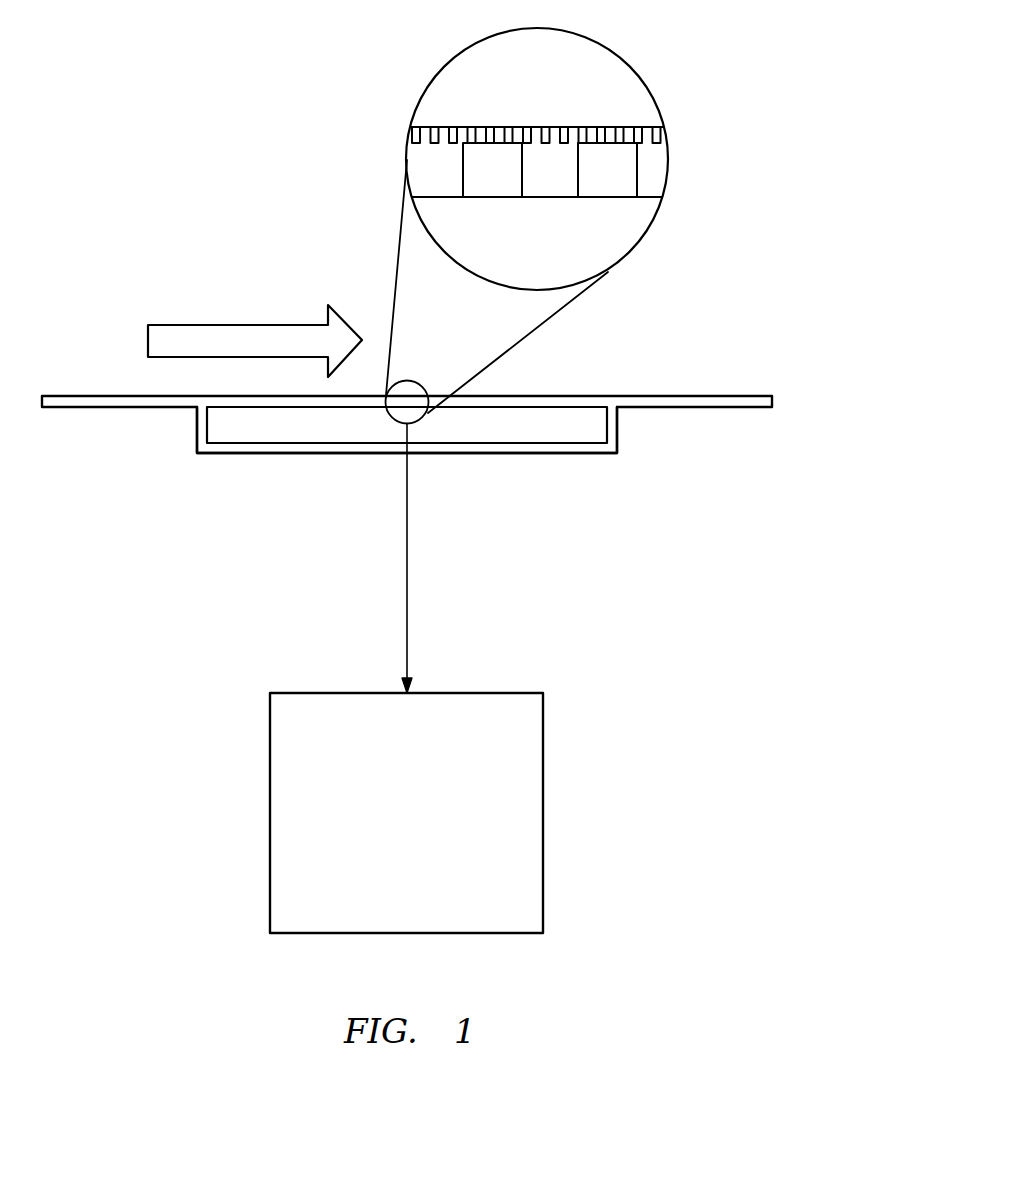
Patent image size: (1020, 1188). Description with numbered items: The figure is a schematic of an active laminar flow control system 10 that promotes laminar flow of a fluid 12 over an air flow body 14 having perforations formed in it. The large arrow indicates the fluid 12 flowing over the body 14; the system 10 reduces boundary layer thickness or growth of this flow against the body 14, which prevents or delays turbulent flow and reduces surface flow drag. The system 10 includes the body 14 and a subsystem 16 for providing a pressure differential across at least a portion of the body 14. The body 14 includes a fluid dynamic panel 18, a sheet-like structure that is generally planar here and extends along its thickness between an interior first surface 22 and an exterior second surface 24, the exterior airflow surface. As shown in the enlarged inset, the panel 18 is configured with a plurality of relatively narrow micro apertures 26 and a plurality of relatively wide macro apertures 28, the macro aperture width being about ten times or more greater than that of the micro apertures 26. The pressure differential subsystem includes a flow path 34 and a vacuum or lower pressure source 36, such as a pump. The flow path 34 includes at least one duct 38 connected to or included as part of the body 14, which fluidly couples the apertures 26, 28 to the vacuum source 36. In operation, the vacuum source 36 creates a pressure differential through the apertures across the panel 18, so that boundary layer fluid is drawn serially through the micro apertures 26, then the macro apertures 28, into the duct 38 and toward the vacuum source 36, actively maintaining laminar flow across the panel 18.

The active laminar flow control system 10 is at (252, 70).
The fluid 12 is at (217, 325).
The air flow body 14 is at (645, 120).
The subsystem 16 is at (188, 767).
The fluid dynamic panel 18 is at (548, 198).
The interior first surface 22 is at (428, 212).
The exterior second surface 24 is at (423, 125).
The micro apertures 26 is at (489, 127).
The macro apertures 28 is at (489, 178).
The flow path 34 is at (421, 480).
The vacuum source 36 is at (543, 755).
The duct 38 is at (563, 447).